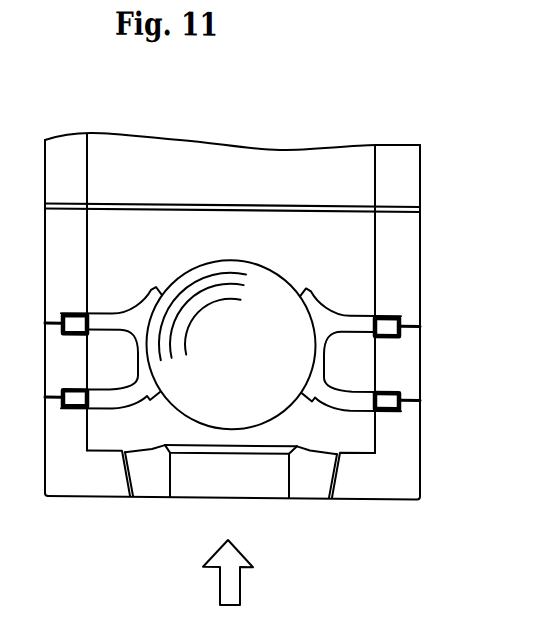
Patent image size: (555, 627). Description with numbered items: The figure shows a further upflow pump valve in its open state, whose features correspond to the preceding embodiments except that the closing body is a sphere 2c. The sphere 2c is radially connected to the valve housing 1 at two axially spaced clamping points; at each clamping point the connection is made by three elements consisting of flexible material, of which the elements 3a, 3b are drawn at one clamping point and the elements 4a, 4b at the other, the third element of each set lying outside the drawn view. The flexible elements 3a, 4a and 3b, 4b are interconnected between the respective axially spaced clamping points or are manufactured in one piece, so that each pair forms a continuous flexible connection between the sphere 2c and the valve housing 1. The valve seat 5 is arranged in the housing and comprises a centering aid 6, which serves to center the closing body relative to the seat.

The valve housing 1 is at (110, 476).
The sphere 2c is at (268, 325).
The element consisting of flexible material 3a is at (347, 317).
The element consisting of flexible material 3b is at (108, 320).
The element consisting of flexible material 4a is at (347, 397).
The element consisting of flexible material 4b is at (112, 394).
The valve seat 5 is at (158, 469).
The centering aid 6 is at (280, 453).